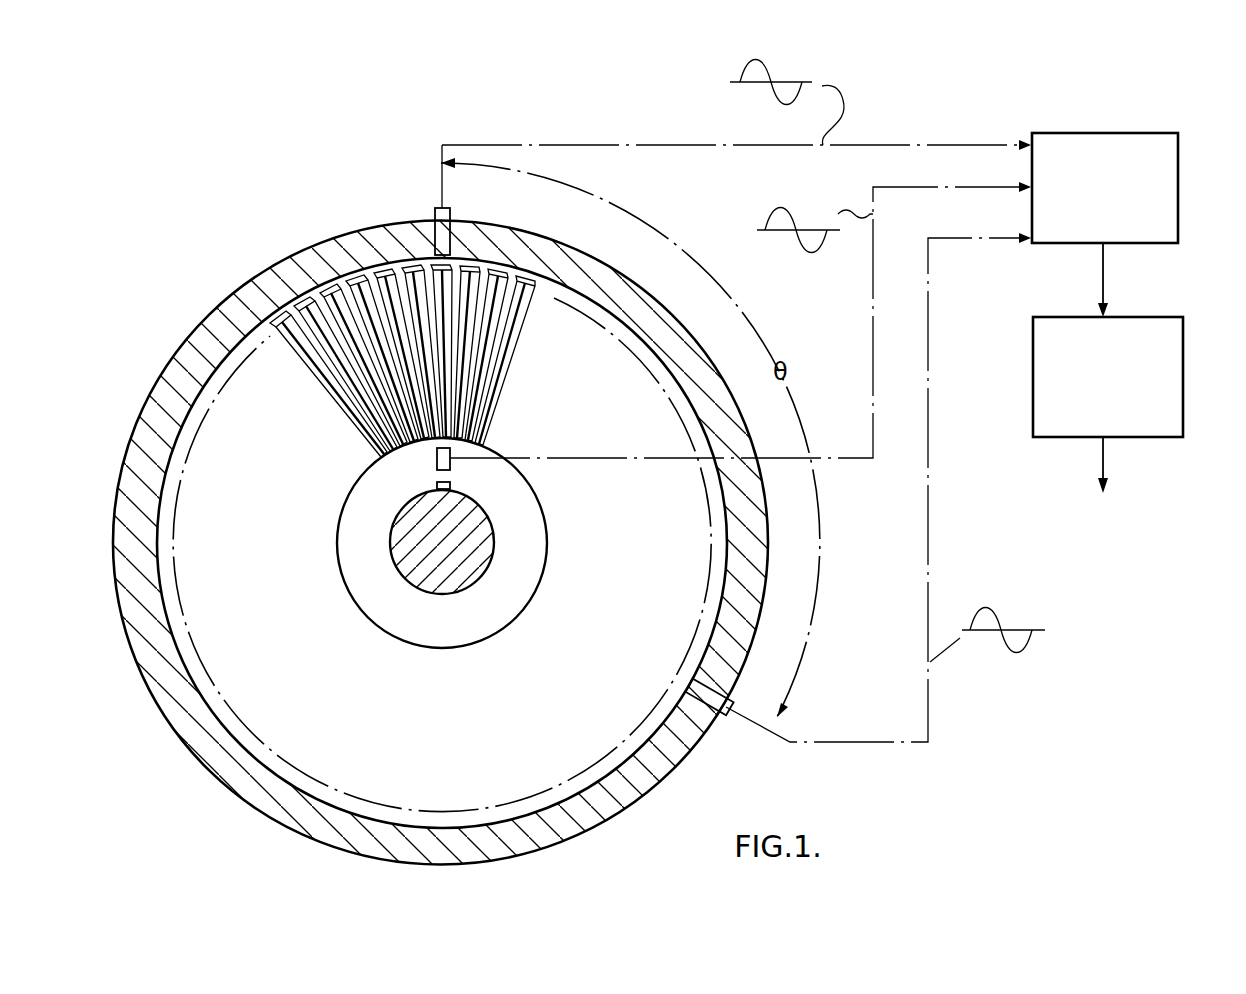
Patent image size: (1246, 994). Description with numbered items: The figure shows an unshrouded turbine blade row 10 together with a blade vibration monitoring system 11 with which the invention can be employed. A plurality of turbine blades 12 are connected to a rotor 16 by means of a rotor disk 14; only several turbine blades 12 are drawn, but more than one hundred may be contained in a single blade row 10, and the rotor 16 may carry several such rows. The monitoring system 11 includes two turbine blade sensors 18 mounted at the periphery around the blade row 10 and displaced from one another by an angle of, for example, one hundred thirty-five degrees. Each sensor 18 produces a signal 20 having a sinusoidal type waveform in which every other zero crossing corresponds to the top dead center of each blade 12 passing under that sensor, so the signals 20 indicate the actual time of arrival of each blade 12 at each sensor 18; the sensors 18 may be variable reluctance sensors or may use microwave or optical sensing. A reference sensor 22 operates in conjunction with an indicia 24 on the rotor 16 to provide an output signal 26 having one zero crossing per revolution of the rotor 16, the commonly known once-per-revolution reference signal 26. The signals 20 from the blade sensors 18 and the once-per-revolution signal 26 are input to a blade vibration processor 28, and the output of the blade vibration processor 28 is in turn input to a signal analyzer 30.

The turbine blade row 10 is at (427, 361).
The blade vibration monitoring system 11 is at (1225, 214).
The turbine blades 12 is at (378, 382).
The rotor disk 14 is at (392, 632).
The rotor 16 is at (418, 547).
The turbine blade sensors 18 is at (436, 222).
The signal 20 is at (738, 66).
The reference sensor 22 is at (437, 458).
The indicia 24 is at (425, 486).
The output signal 26 is at (766, 212).
The blade vibration processor 28 is at (1098, 133).
The signal analyzer 30 is at (1147, 437).